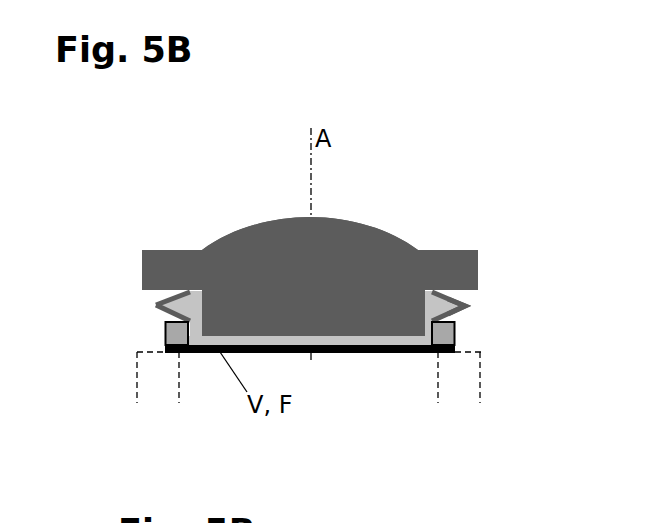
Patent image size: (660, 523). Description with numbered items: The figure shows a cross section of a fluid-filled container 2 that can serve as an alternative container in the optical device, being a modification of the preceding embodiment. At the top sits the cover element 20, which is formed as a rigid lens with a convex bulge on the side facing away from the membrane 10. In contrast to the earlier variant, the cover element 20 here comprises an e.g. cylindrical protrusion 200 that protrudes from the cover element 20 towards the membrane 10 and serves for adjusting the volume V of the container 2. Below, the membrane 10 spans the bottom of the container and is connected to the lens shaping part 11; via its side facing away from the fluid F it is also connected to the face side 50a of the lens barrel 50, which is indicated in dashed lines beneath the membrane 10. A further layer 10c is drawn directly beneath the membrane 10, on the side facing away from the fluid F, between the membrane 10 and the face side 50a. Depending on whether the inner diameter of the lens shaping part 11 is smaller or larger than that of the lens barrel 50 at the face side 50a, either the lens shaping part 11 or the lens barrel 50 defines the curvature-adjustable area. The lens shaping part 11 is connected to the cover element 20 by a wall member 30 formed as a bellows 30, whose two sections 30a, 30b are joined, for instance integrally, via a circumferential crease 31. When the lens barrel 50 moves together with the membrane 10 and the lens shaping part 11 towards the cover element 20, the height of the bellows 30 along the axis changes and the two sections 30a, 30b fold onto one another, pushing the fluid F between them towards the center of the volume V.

The container 2 is at (332, 218).
The cover element 20 is at (238, 225).
The protrusion 200 is at (394, 320).
The wall member (bellows) 30 is at (465, 307).
The first bellows section 30a is at (167, 295).
The second bellows section 30b is at (163, 315).
The circumferential crease 31 is at (465, 306).
The membrane 10 is at (332, 353).
The membrane base layer 10c is at (358, 353).
The lens shaping part 11 is at (177, 328).
The lens barrel 50 is at (468, 372).
The face side of the lens barrel 50a is at (465, 352).